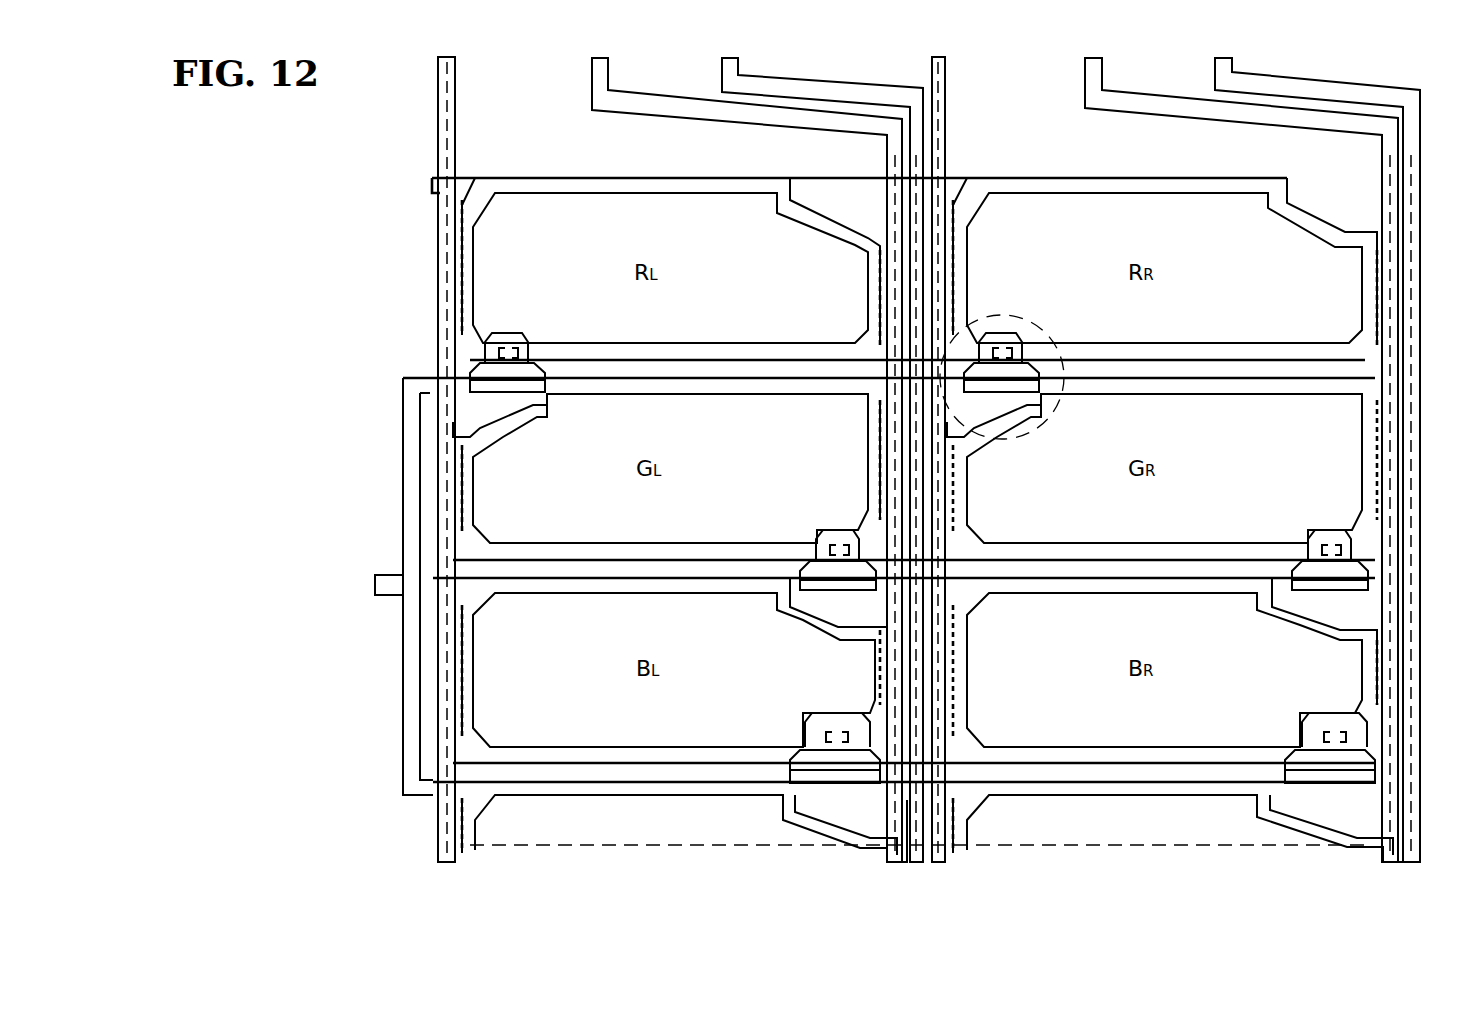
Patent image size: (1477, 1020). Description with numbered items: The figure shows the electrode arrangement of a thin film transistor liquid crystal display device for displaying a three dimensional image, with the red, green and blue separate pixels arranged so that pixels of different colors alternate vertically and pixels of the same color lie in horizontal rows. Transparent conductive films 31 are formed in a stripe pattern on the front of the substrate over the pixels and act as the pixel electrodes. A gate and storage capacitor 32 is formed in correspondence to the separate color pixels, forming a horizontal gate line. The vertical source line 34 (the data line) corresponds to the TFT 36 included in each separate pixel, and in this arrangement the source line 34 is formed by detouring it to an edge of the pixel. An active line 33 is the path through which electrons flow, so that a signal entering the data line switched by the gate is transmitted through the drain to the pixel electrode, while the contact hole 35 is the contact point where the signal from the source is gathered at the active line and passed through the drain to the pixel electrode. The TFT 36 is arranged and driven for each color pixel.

The transparent conductive film 31 is at (566, 264).
The gate and storage capacitor 32 is at (410, 397).
The active line 33 is at (470, 408).
The source line 34 is at (450, 97).
The contact hole 35 is at (512, 335).
The TFT 36 is at (1011, 318).